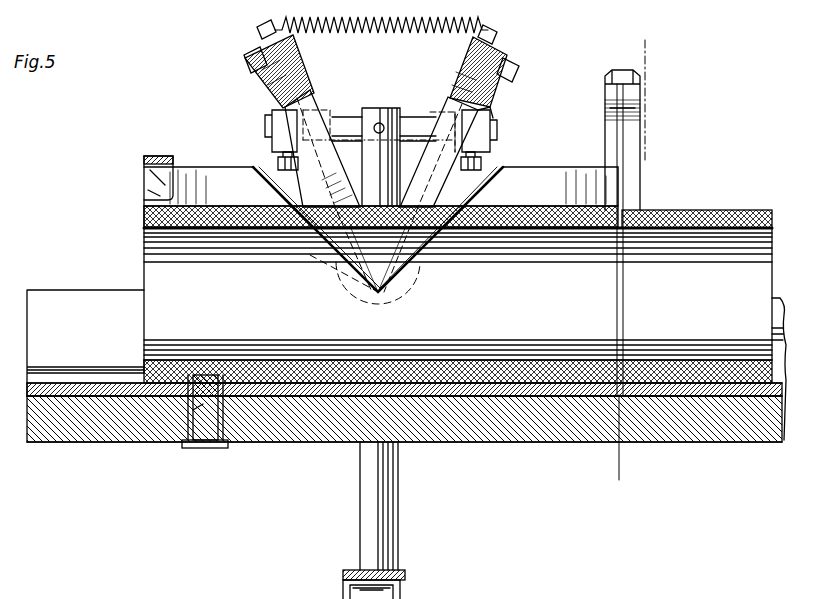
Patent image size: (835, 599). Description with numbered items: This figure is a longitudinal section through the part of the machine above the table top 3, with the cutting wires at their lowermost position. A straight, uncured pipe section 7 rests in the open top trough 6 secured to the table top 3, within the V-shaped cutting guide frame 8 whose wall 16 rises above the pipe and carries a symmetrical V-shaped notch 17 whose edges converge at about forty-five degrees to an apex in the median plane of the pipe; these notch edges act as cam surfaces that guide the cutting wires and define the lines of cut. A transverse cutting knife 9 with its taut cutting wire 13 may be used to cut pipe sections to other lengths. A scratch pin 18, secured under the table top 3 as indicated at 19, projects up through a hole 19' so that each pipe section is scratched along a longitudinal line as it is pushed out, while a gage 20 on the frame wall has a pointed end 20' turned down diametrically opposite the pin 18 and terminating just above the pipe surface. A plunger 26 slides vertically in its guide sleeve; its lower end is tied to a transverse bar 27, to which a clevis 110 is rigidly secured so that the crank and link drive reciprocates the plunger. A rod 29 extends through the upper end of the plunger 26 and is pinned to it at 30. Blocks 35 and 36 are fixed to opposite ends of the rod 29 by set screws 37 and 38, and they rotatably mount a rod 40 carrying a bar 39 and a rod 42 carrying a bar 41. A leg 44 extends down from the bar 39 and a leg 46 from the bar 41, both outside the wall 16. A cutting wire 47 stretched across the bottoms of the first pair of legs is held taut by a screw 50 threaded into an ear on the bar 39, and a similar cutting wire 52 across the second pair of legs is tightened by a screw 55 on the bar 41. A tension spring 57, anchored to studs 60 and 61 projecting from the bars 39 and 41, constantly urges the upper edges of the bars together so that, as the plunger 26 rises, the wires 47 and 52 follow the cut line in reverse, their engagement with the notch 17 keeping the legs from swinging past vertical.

The table top 3 is at (305, 443).
The open top trough 6 is at (705, 45).
The pipe section 7 is at (702, 210).
The V-shaped cutting guide frame 8 is at (187, 167).
The transverse cutting knife 9 is at (640, 138).
The cutting wire 13 is at (628, 110).
The wall 16 is at (549, 178).
The V-shaped notch 17 is at (490, 180).
The scratch pin 18 is at (205, 430).
The securing point of scratch pin 19 is at (207, 460).
The hole 19' is at (168, 435).
The gage 20 is at (138, 164).
The pointed end 20' is at (127, 183).
The plunger 26 is at (392, 112).
The transverse bar 27 is at (343, 585).
The rod 29 is at (342, 122).
The pin 30 is at (378, 123).
The block 35 is at (490, 104).
The block 36 is at (270, 140).
The set screw 37 is at (478, 165).
The set screw 38 is at (289, 173).
The bar 39 is at (476, 65).
The rod 40 is at (450, 76).
The bar 41 is at (300, 56).
The rod 42 is at (268, 97).
The leg 44 is at (424, 176).
The leg 46 is at (352, 176).
The cutting wire 47 is at (378, 295).
The screw 50 is at (518, 66).
The cutting wire 52 is at (338, 281).
The screw 55 is at (247, 65).
The tension spring 57 is at (398, 36).
The stud 60 is at (498, 32).
The stud 61 is at (257, 32).
The clevis 110 is at (405, 591).